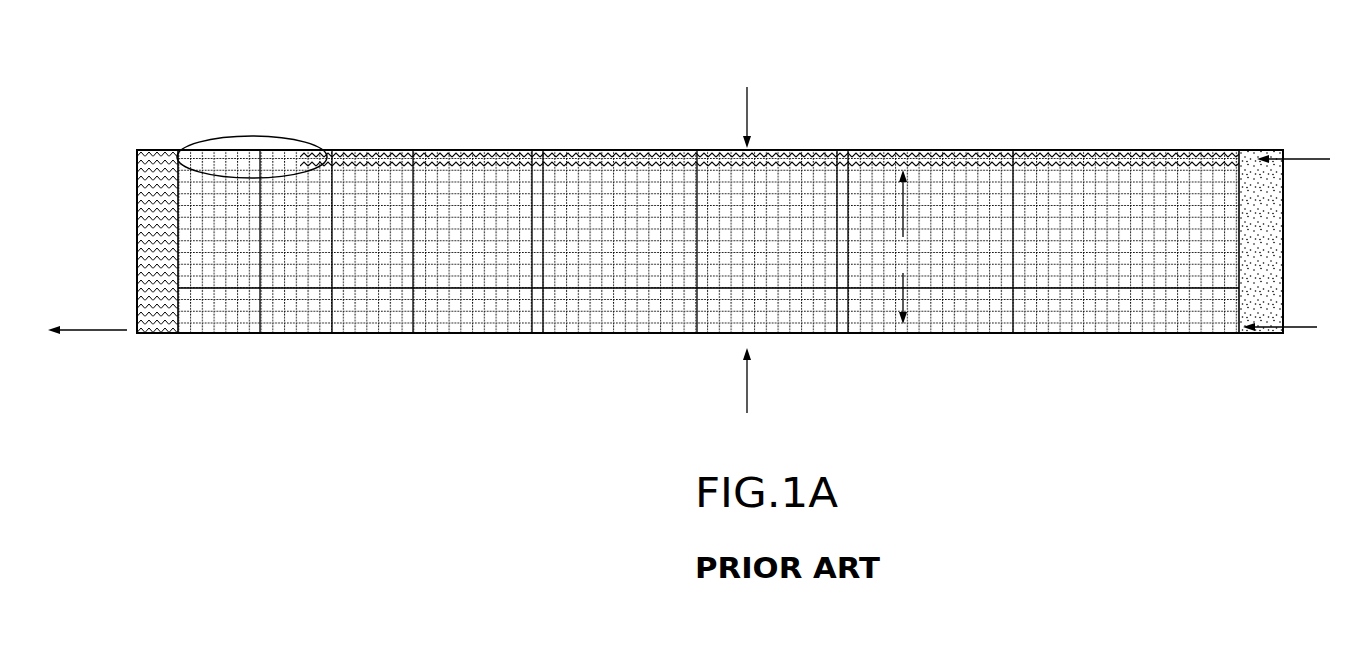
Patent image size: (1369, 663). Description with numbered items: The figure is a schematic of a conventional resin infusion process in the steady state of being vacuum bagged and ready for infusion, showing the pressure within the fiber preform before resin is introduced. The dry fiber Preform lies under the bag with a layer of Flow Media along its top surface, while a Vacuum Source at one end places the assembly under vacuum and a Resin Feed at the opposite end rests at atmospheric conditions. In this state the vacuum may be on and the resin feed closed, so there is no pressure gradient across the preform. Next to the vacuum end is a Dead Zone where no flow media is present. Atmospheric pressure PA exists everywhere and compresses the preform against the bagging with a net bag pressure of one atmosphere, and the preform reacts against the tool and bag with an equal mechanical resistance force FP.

The vacuum source Vacuum Source is at (153, 168).
The dead zone (no flow media) Dead Zone is at (250, 148).
The flow media Flow Media is at (809, 150).
The preform Preform is at (1026, 220).
The resin feed Resin Feed is at (1260, 216).
The atmospheric pressure PA is at (705, 246).
The mechanical resistance force FP is at (906, 247).